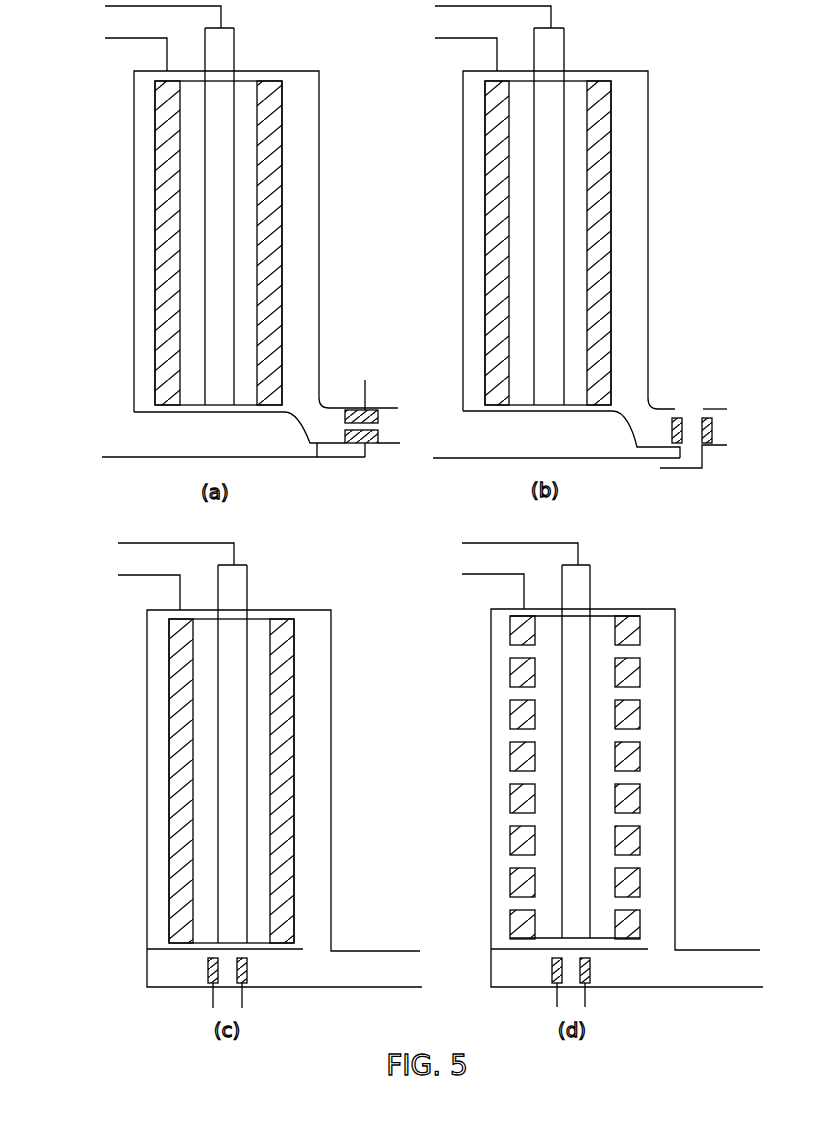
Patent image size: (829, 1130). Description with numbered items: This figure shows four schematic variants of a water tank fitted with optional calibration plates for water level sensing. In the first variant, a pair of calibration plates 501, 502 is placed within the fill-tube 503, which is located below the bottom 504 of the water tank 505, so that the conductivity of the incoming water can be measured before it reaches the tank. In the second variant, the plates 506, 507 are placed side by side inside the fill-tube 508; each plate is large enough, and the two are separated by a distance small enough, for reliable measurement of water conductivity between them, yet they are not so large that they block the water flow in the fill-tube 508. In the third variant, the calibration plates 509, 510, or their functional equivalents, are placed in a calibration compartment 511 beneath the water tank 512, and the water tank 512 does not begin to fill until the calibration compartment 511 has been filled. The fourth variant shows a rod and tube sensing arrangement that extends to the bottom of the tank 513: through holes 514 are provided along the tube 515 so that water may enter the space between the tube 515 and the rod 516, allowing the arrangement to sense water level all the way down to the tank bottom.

The calibration plate 501 is at (368, 445).
The calibration plate 502 is at (370, 410).
The fill-tube 503 is at (318, 445).
The bottom of the water tank 504 is at (160, 417).
The water tank 505 is at (124, 227).
The plate 506 is at (678, 412).
The plate 507 is at (705, 408).
The fill-tube 508 is at (723, 450).
The calibration plate 509 is at (207, 967).
The calibration plate 510 is at (248, 965).
The calibration compartment 511 is at (140, 952).
The water tank 512 is at (136, 763).
The tank 513 is at (490, 951).
The through holes 514 is at (508, 731).
The tube 515 is at (510, 625).
The rod 516 is at (592, 585).